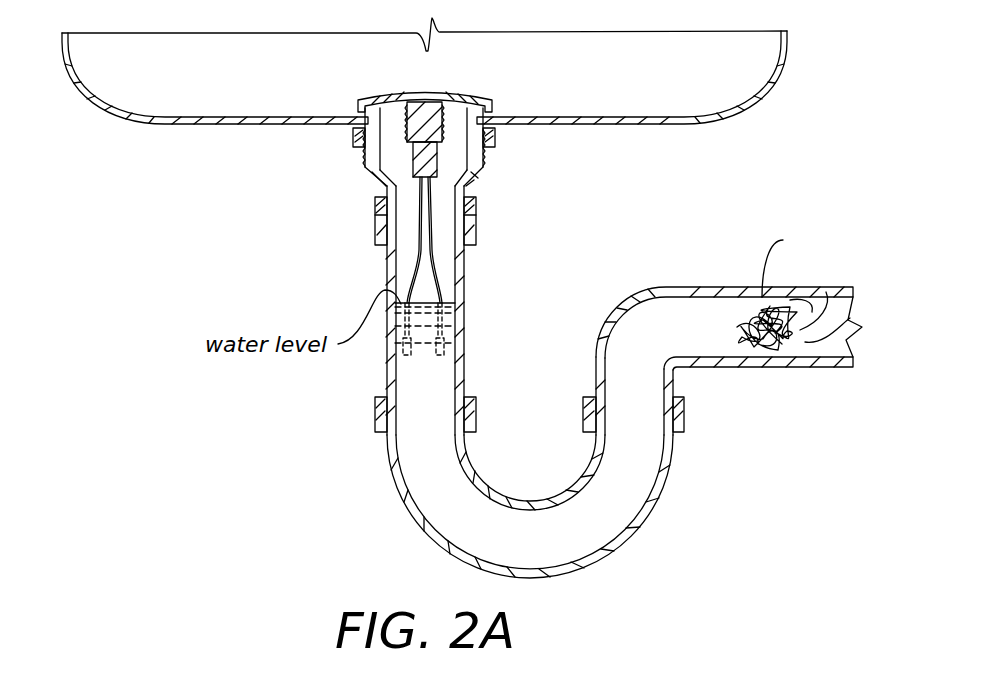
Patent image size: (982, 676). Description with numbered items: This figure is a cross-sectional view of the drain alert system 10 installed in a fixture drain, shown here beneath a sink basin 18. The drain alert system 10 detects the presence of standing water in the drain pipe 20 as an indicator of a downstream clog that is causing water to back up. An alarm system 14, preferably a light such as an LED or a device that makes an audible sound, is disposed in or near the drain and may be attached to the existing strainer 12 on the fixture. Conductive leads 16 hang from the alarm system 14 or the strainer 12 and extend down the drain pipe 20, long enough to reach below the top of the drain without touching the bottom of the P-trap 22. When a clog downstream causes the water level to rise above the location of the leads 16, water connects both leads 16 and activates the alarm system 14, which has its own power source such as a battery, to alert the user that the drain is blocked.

The drain alert system 10 is at (398, 152).
The strainer 12 is at (438, 95).
The alarm system 14 is at (443, 135).
The conductive leads 16 is at (420, 268).
The sink basin 18 is at (758, 103).
The drain pipe 20 is at (387, 377).
The P-trap 22 is at (537, 570).